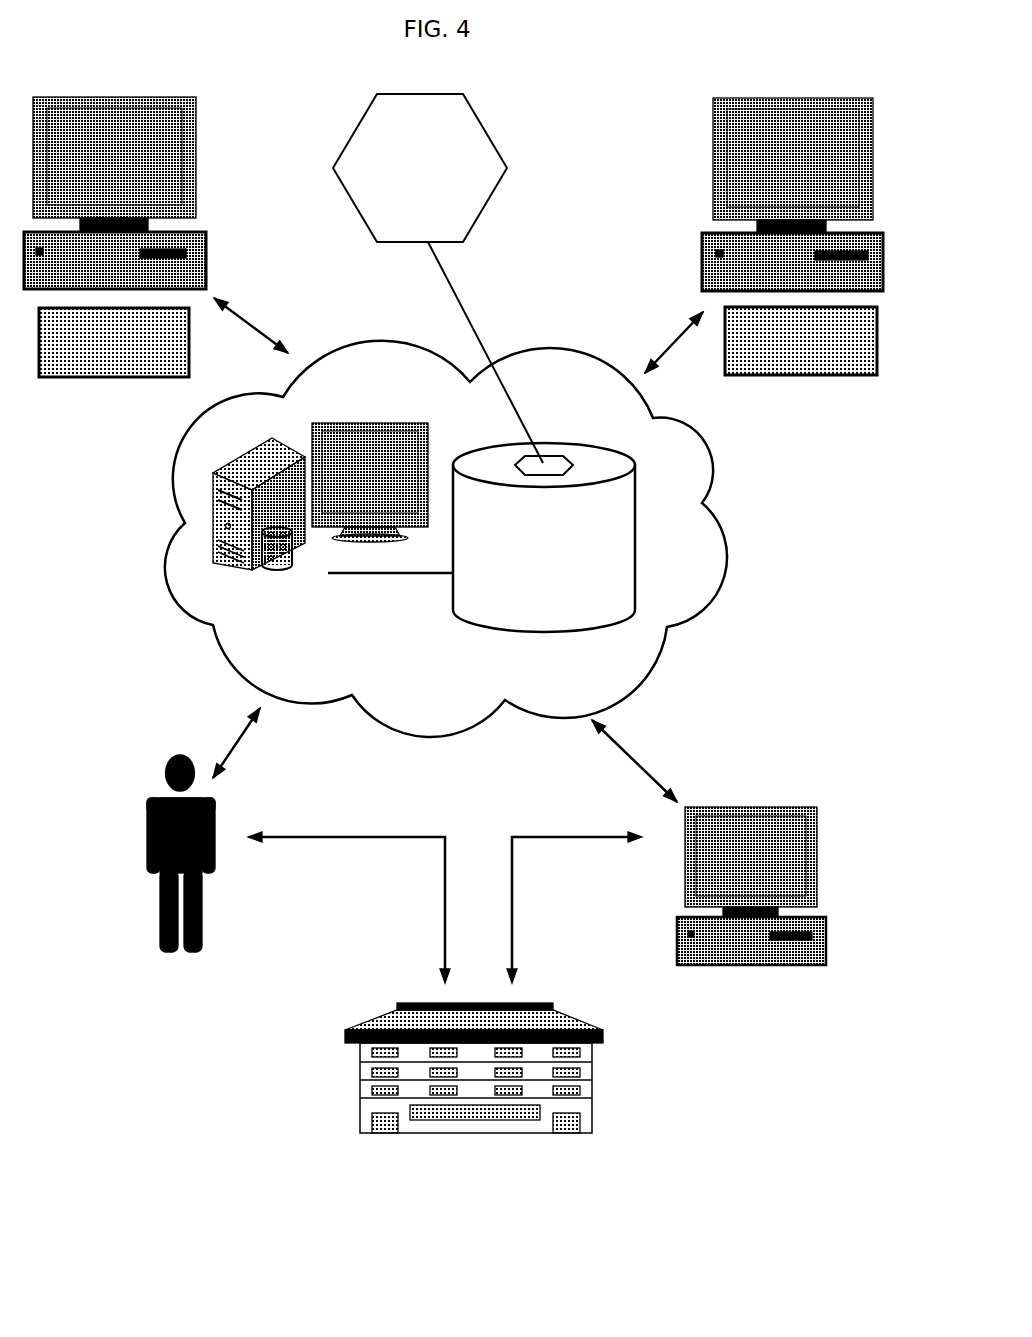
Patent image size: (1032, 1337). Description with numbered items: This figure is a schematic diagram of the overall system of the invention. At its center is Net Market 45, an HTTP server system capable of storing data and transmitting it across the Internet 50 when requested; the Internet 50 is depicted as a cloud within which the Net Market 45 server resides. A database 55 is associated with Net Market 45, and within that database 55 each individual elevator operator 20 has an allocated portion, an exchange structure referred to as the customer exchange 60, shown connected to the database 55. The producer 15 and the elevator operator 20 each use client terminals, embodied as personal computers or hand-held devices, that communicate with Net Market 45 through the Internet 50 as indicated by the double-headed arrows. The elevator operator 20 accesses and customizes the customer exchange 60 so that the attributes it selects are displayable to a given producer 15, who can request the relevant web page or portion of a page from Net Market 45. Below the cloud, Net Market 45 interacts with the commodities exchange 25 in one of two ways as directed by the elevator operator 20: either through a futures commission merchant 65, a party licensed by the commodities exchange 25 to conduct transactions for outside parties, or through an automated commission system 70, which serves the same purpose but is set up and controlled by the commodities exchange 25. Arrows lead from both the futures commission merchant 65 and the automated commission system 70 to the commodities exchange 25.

The producer 15 is at (196, 127).
The elevator operator 20 is at (873, 112).
The customer exchange 60 is at (488, 133).
The Internet 50 is at (720, 522).
The database 55 is at (610, 563).
The Net Market 45 is at (503, 670).
The futures commission merchant 65 is at (132, 838).
The automated commission system 70 is at (825, 845).
The commodities exchange 25 is at (593, 1100).